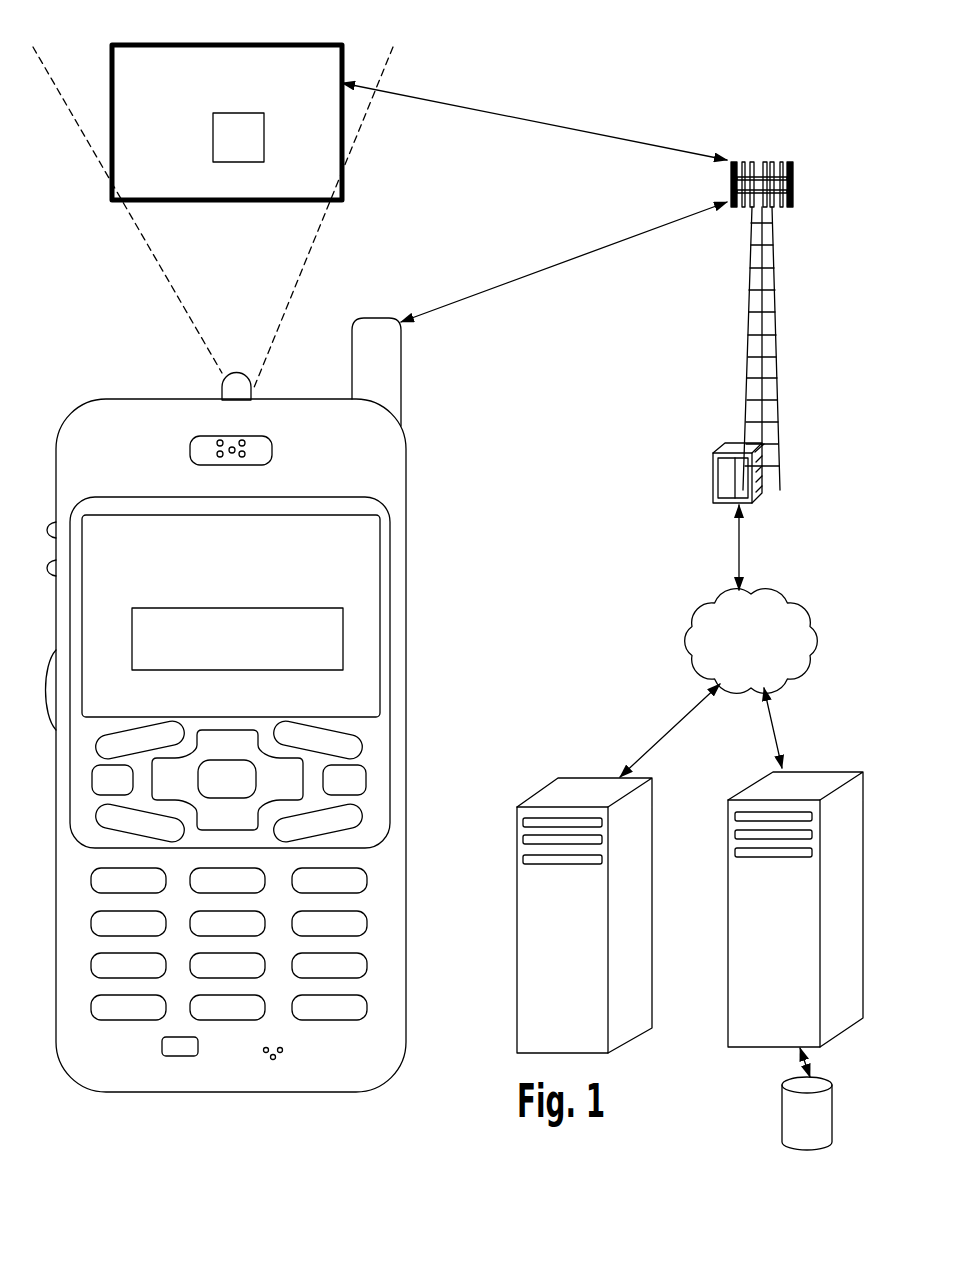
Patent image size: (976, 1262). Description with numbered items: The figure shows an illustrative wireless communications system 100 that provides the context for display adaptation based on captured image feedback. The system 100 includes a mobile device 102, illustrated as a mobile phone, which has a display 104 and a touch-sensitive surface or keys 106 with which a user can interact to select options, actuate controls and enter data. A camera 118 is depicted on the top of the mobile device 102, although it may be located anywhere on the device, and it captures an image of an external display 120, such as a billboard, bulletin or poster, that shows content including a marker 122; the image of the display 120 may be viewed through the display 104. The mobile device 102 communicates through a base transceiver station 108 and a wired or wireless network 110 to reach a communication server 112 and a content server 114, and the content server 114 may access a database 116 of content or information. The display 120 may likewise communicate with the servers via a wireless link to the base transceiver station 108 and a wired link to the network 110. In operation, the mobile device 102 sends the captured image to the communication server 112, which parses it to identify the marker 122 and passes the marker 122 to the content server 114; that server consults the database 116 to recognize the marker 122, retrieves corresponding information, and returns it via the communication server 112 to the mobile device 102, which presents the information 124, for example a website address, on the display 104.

The wireless communications system 100 is at (534, 161).
The mobile device 102 is at (262, 725).
The display 104 is at (264, 672).
The keys 106 is at (410, 722).
The base transceiver station 108 is at (762, 498).
The network 110 is at (712, 673).
The communication server 112 is at (525, 1002).
The content server 114 is at (733, 984).
The database 116 is at (785, 1100).
The camera 118 is at (244, 396).
The display 120 is at (225, 217).
The marker 122 is at (264, 134).
The information 124 is at (338, 630).